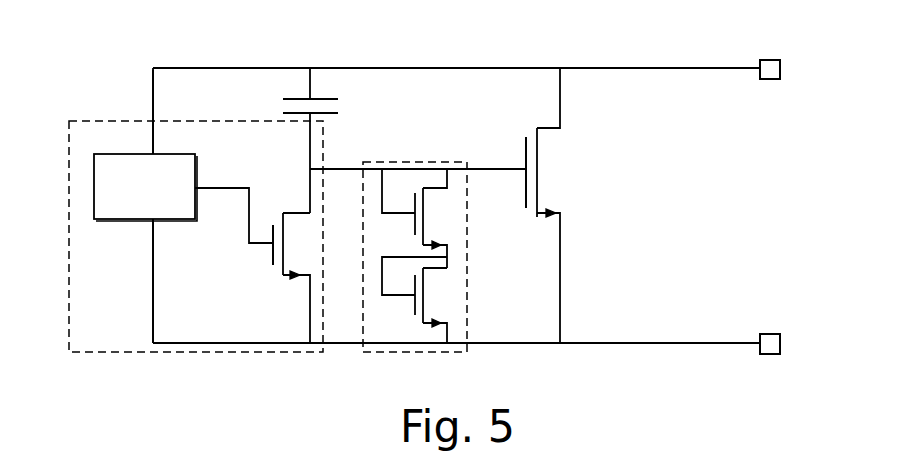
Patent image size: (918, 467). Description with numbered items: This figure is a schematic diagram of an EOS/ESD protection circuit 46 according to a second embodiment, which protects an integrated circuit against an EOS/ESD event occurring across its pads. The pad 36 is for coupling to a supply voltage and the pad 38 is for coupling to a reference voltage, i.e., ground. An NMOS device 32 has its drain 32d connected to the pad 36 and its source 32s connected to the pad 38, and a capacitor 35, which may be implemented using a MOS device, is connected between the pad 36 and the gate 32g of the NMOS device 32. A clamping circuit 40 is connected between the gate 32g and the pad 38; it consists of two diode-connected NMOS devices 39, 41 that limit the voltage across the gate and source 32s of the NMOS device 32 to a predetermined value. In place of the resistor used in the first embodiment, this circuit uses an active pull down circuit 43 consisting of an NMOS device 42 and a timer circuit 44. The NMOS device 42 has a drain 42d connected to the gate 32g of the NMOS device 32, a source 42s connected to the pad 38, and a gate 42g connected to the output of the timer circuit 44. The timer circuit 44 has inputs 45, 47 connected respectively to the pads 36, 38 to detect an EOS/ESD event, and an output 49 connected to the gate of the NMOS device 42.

The NMOS device 32 is at (549, 178).
The drain 32d is at (545, 128).
The gate 32g is at (500, 167).
The source 32s is at (544, 221).
The capacitor 35 is at (330, 105).
The pad 36 is at (760, 62).
The pad 38 is at (780, 335).
The diode-connected NMOS device 39 is at (446, 211).
The clamping circuit 40 is at (444, 272).
The diode-connected NMOS device 41 is at (447, 288).
The NMOS device 42 is at (258, 262).
The drain 42d is at (302, 212).
The gate 42g is at (272, 248).
The source 42s is at (297, 287).
The active pull down circuit 43 is at (77, 131).
The timer circuit 44 is at (93, 175).
The input 45 is at (152, 154).
The EOS/ESD protection circuit 46 is at (782, 193).
The input 47 is at (150, 222).
The output 49 is at (213, 190).